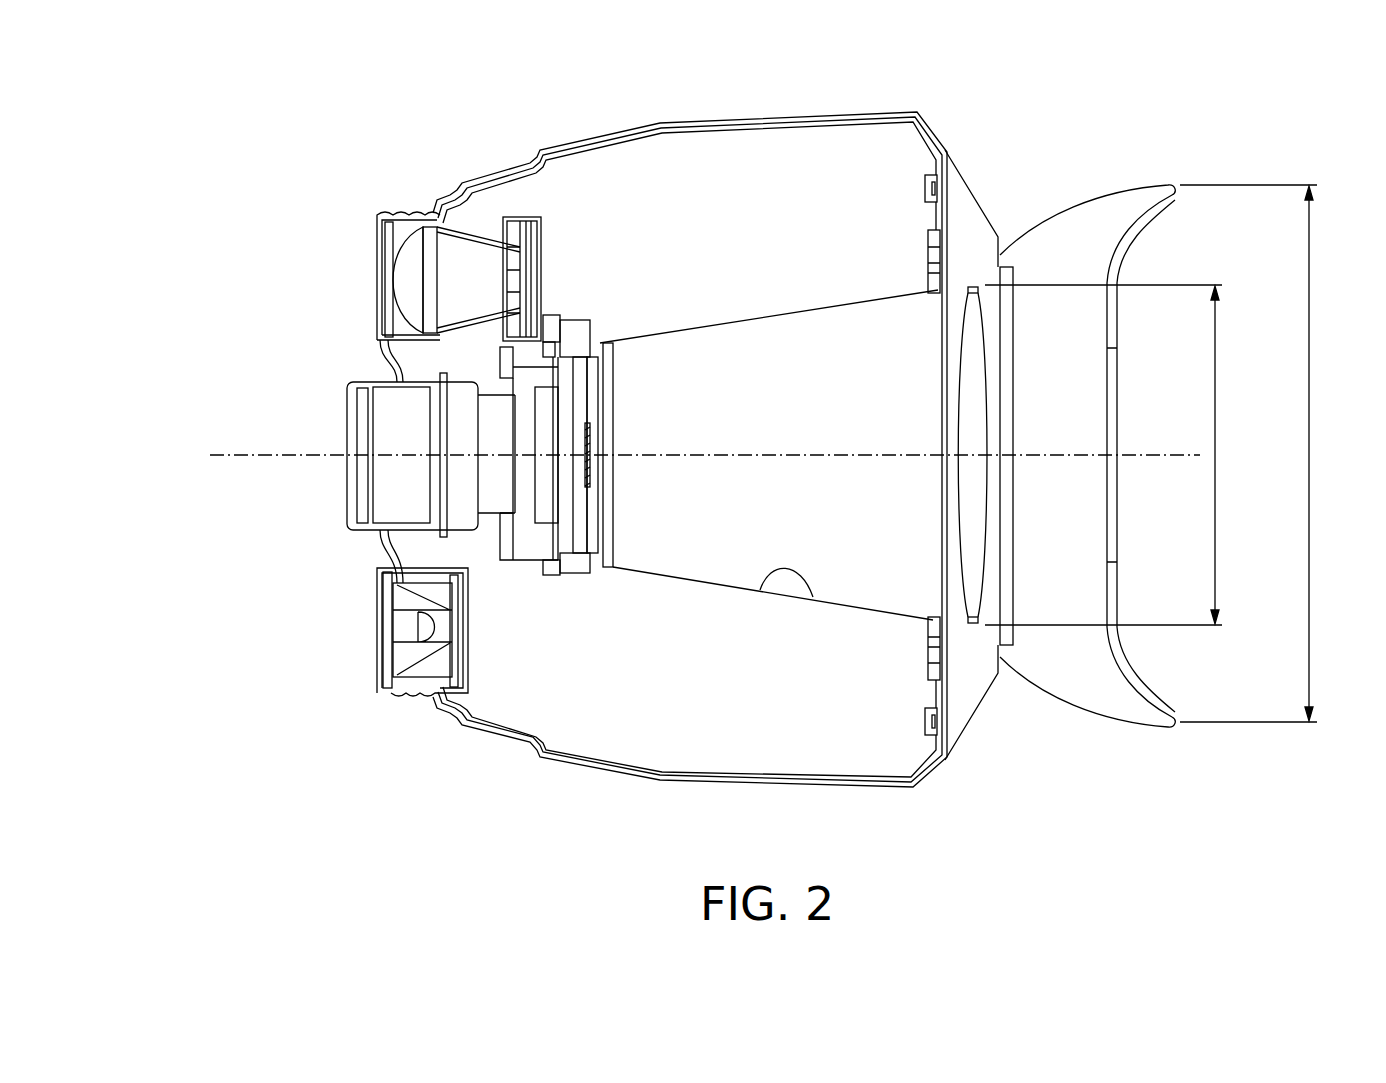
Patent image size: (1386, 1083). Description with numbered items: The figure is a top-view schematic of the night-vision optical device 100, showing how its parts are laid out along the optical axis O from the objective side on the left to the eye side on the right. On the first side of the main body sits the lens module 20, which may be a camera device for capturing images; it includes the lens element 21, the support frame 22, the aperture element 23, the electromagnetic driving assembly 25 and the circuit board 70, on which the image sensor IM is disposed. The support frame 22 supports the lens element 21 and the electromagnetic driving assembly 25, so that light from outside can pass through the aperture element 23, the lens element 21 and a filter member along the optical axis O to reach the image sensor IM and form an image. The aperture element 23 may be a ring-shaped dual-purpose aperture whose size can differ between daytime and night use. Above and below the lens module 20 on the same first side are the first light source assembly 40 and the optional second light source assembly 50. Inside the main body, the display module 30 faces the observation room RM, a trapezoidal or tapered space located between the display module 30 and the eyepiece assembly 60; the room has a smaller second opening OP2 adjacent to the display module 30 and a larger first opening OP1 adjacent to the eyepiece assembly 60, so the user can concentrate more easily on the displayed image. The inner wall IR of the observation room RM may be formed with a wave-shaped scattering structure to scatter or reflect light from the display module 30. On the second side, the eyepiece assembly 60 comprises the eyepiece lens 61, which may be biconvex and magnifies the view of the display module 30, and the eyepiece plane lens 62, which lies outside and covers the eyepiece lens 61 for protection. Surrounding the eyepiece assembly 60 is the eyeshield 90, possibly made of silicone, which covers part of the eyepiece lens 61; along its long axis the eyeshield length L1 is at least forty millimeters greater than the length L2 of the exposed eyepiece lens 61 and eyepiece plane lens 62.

The night-vision optical device 100 is at (170, 54).
The lens module 20 is at (379, 462).
The lens element 21 is at (390, 497).
The support frame 22 is at (573, 328).
The aperture element 23 is at (362, 483).
The electromagnetic driving assembly 25 is at (566, 572).
The display module 30 is at (610, 497).
The first light source assembly 40 is at (372, 277).
The second light source assembly 50 is at (370, 627).
The eyepiece assembly 60 is at (997, 567).
The eyepiece lens 61 is at (975, 628).
The eyepiece plane lens 62 is at (1007, 612).
The circuit board 70 is at (607, 500).
The eyeshield 90 is at (1083, 368).
The optical axis O is at (691, 456).
The first opening OP1 is at (940, 293).
The second opening OP2 is at (613, 380).
The observation room RM is at (765, 370).
The image sensor IM is at (590, 540).
The inner wall IR is at (813, 597).
The length of the eyeshield L1 is at (1265, 453).
The length of the exposed eyepiece lens and eyepiece plane lens L2 is at (1120, 455).